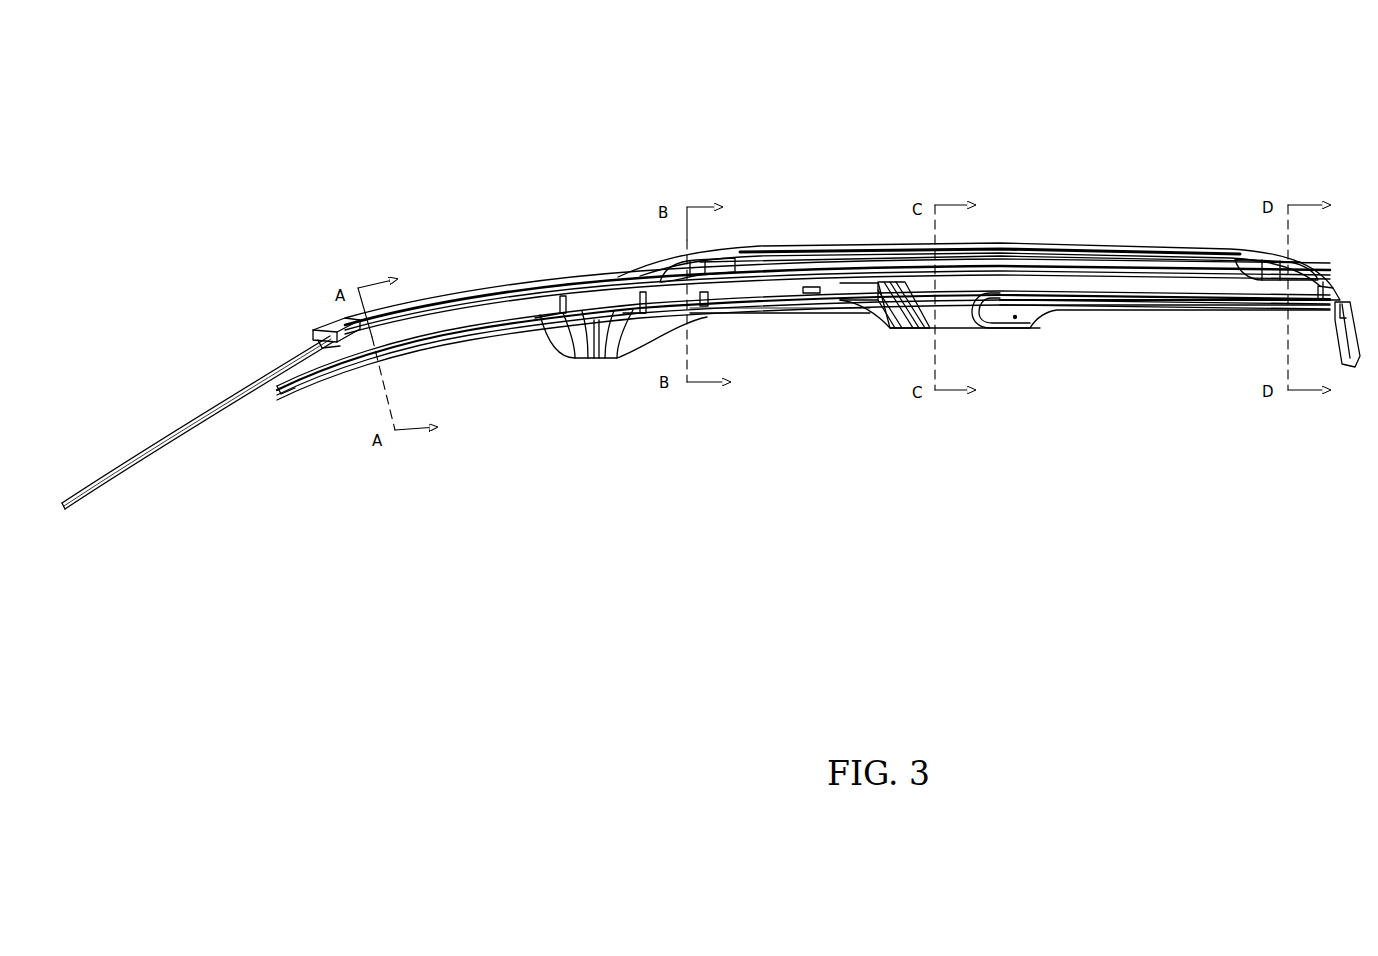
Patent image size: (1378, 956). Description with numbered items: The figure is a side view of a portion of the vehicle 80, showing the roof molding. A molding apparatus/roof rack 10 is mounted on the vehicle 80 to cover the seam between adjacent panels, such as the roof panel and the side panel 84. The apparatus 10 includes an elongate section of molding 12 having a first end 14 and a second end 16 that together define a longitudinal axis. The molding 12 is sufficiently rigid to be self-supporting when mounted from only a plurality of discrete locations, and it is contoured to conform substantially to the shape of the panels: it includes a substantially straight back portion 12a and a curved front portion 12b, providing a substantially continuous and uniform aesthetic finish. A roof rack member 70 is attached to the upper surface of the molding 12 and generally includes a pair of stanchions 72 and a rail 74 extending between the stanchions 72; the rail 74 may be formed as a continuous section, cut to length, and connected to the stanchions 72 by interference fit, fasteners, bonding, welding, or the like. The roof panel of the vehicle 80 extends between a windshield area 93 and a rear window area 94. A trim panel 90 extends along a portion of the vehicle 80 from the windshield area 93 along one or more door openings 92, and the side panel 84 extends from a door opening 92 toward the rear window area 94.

The molding apparatus/roof rack 10 is at (787, 210).
The molding 12 is at (475, 258).
The back portion 12a is at (1073, 270).
The front portion 12b is at (458, 300).
The first end 14 is at (340, 318).
The second end 16 is at (1323, 282).
The roof rack member 70 is at (1085, 214).
The stanchions 72 is at (650, 268).
The rail 74 is at (1015, 245).
The vehicle 80 is at (782, 362).
The side panel 84 is at (947, 297).
The trim panel 90 is at (840, 285).
The door openings 92 is at (527, 317).
The windshield area 93 is at (162, 435).
The rear window area 94 is at (1350, 330).